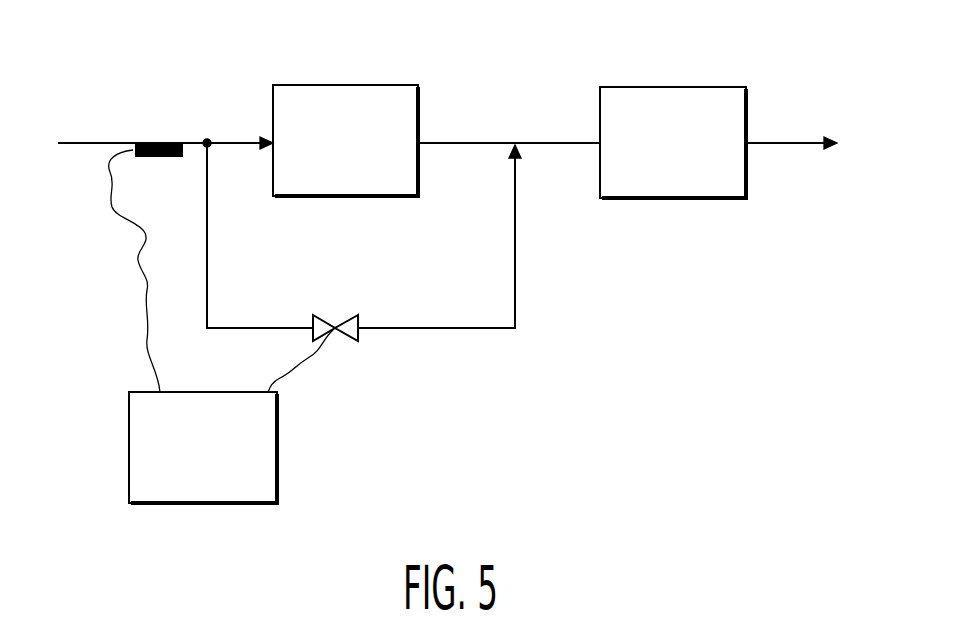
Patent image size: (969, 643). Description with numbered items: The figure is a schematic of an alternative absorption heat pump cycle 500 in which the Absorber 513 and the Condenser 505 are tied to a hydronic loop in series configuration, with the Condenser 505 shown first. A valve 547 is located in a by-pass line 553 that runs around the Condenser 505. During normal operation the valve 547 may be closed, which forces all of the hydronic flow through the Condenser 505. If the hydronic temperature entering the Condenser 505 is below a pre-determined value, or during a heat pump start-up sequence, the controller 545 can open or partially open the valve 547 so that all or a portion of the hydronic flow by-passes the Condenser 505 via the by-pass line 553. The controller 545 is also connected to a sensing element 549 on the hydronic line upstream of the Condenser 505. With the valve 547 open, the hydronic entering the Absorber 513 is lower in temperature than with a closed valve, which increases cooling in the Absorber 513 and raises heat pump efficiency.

The heat pump cycle 500 is at (685, 403).
The Condenser 505 is at (418, 110).
The Absorber 513 is at (677, 198).
The controller 545 is at (277, 457).
The valve 547 is at (347, 314).
The sensor 549 is at (160, 158).
The by-pass line 553 is at (482, 328).